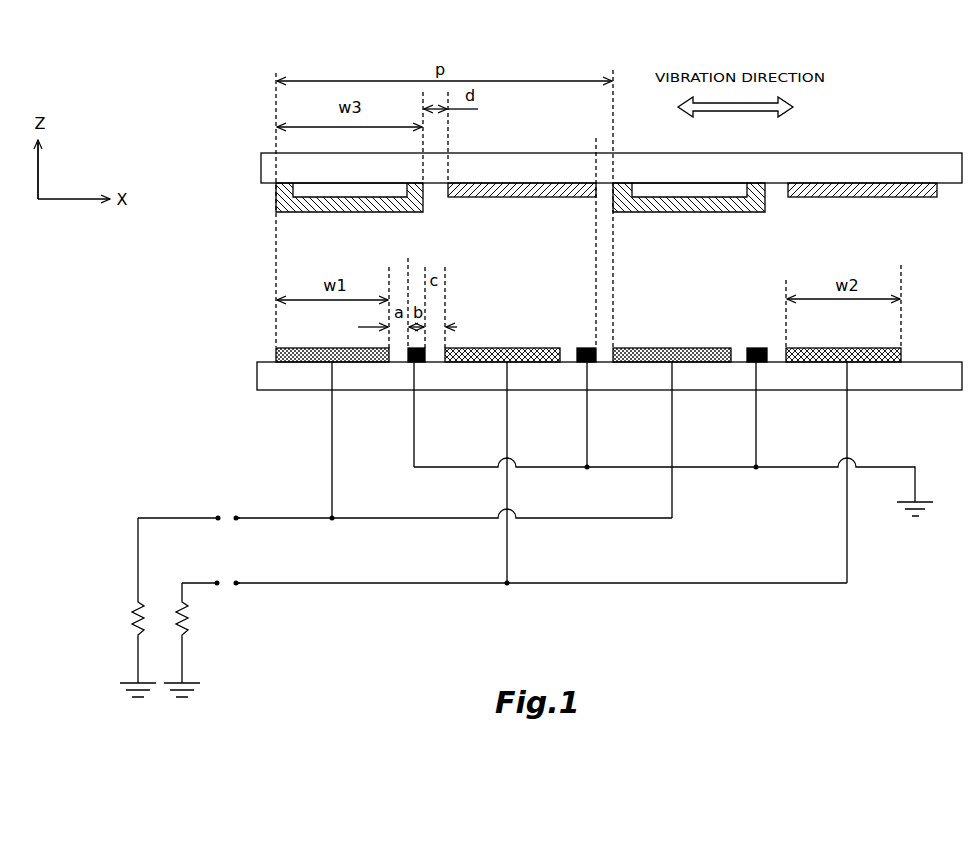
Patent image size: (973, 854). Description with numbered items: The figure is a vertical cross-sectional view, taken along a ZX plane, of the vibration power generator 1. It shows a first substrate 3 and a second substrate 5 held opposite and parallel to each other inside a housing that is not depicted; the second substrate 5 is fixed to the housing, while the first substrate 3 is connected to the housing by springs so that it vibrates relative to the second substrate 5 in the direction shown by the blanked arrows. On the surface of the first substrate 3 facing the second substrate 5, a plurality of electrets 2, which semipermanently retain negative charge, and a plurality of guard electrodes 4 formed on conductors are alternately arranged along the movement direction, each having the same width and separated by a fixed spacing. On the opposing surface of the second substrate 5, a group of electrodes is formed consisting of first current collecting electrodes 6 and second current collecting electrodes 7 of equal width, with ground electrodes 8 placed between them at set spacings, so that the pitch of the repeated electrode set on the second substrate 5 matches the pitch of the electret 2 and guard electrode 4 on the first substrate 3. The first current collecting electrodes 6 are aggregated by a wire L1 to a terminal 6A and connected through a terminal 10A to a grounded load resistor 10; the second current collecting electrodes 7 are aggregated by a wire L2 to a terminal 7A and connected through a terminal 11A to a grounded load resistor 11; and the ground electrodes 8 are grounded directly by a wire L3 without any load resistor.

The vibration power generator 1 is at (226, 224).
The electret 2 is at (345, 207).
The first substrate 3 is at (870, 152).
The guard electrode 4 is at (513, 196).
The second substrate 5 is at (272, 391).
The first current collecting electrode 6 is at (320, 348).
The second current collecting electrode 7 is at (500, 348).
The ground electrode 8 is at (422, 363).
The terminal 6A is at (238, 513).
The terminal 7A is at (238, 588).
The load resistor 10 is at (130, 612).
The load resistor 11 is at (190, 626).
The terminal 10A is at (215, 514).
The terminal 11A is at (215, 580).
The wire L1 is at (655, 520).
The wire L2 is at (673, 585).
The wire L3 is at (708, 468).